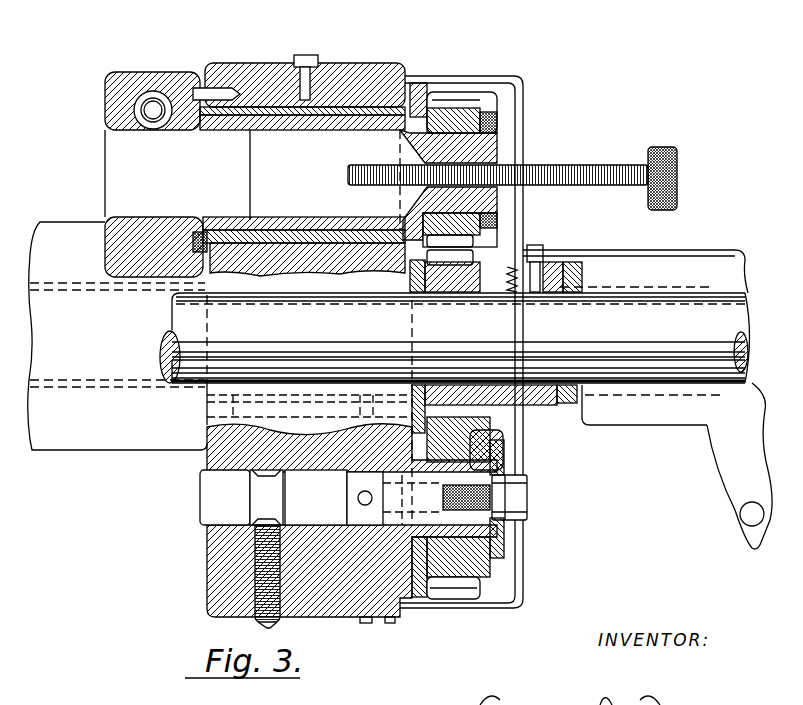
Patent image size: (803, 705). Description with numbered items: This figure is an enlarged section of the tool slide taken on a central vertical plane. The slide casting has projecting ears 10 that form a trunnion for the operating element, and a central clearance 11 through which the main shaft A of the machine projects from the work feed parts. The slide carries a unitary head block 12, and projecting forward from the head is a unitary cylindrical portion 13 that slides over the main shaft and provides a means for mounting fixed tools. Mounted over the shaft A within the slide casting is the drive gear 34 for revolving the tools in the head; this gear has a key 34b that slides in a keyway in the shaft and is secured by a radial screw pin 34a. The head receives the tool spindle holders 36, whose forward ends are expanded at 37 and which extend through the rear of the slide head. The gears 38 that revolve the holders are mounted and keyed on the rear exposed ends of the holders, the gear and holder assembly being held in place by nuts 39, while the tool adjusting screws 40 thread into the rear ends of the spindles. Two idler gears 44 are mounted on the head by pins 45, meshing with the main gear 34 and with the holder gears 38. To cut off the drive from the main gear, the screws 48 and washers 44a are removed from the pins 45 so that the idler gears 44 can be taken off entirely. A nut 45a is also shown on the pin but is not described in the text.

The projecting ears 10 is at (720, 503).
The central clearance 11 is at (632, 292).
The head block 12 is at (207, 460).
The cylindrical portion 13 is at (58, 232).
The drive gear 34 is at (514, 255).
The radial screw pin 34a is at (547, 255).
The key 34b is at (470, 285).
The tool spindle holders 36 is at (325, 125).
The expanded forward ends 37 is at (109, 75).
The gears 38 is at (463, 108).
The nuts 39 is at (497, 133).
The tool adjusting screws 40 is at (540, 167).
The idler gears 44 is at (477, 557).
The washers 44a is at (505, 540).
The pins 45 is at (430, 515).
The nut 45a is at (525, 490).
The screws 48 is at (257, 575).
The main shaft A is at (657, 355).